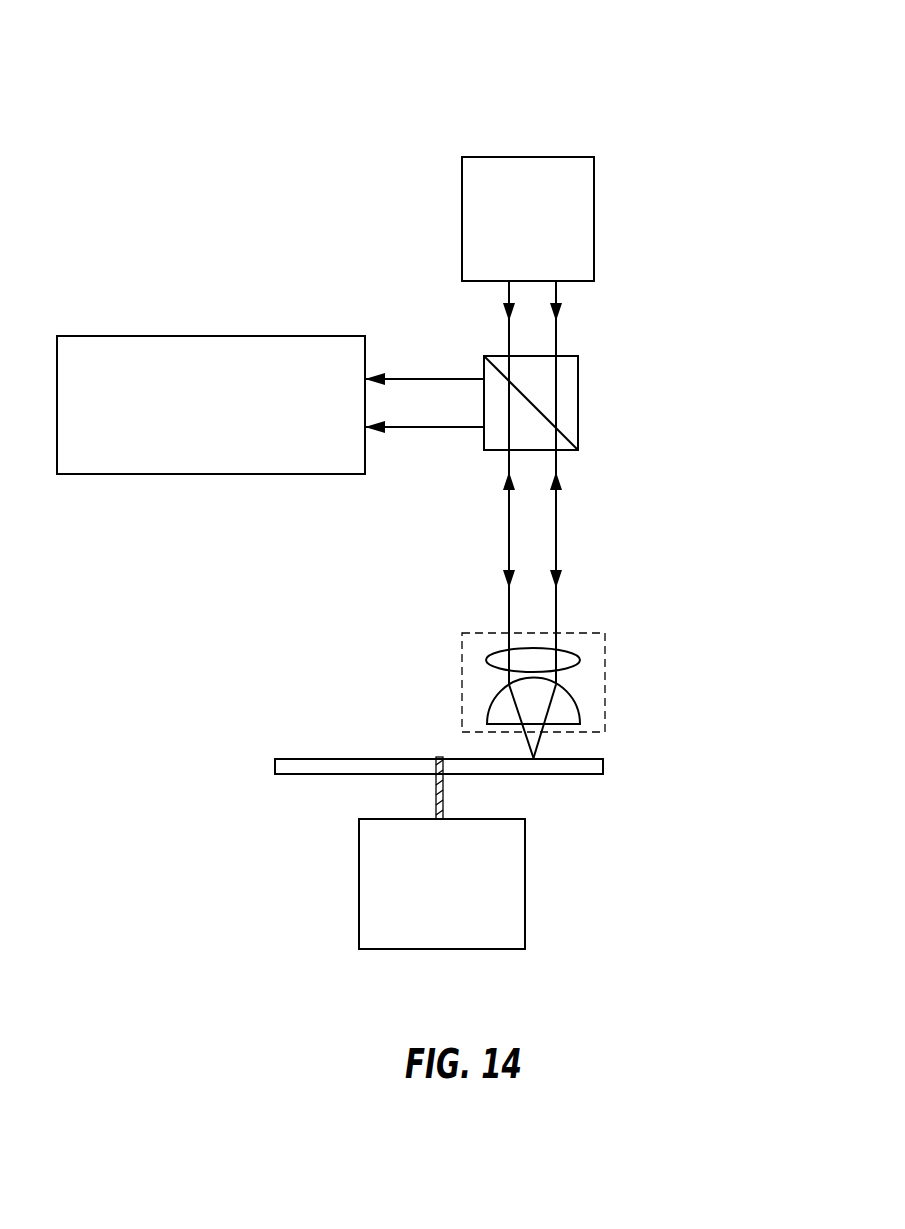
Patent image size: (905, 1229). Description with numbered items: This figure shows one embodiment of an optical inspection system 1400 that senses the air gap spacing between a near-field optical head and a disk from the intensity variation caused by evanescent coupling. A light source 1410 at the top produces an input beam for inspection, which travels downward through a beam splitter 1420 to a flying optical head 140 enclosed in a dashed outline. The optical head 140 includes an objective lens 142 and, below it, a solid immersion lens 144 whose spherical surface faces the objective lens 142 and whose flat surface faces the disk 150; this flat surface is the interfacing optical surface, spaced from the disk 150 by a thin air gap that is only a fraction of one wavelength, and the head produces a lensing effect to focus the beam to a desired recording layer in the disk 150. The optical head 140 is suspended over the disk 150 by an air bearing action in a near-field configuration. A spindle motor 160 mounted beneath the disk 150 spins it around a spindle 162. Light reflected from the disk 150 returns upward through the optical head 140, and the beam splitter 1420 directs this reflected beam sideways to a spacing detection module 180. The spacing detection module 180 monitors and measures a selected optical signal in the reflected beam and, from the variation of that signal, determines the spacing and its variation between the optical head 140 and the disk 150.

The optical inspection system 1400 is at (614, 64).
The light source 1410 is at (530, 157).
The beam splitter 1420 is at (578, 408).
The spacing detection module 180 is at (222, 336).
The optical head 140 is at (462, 690).
The objective lens 142 is at (580, 660).
The solid immersion lens 144 is at (578, 705).
The disk 150 is at (533, 774).
The spindle 162 is at (437, 757).
The spindle motor 160 is at (440, 949).